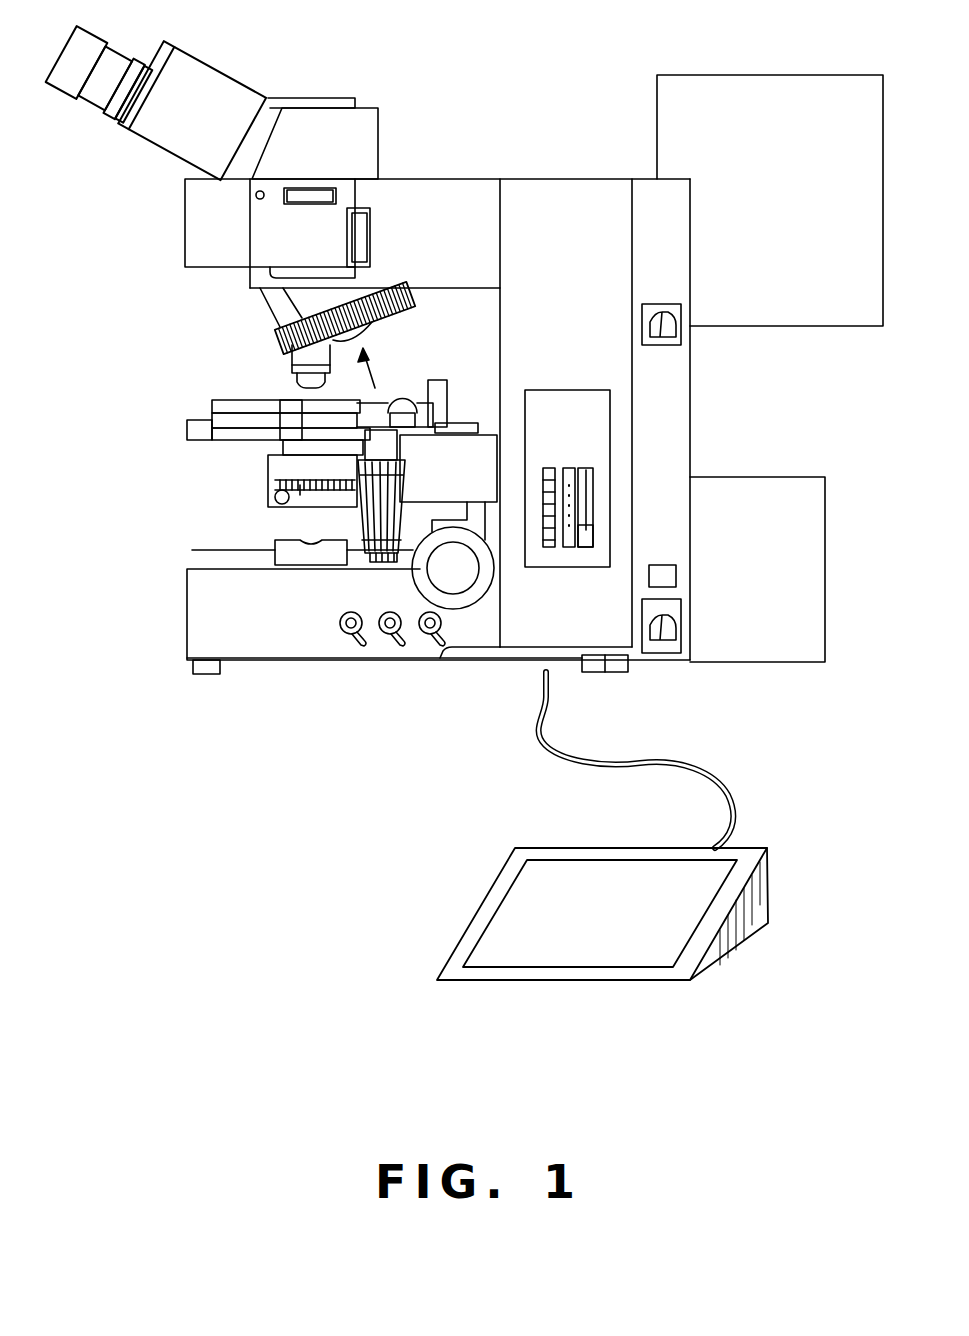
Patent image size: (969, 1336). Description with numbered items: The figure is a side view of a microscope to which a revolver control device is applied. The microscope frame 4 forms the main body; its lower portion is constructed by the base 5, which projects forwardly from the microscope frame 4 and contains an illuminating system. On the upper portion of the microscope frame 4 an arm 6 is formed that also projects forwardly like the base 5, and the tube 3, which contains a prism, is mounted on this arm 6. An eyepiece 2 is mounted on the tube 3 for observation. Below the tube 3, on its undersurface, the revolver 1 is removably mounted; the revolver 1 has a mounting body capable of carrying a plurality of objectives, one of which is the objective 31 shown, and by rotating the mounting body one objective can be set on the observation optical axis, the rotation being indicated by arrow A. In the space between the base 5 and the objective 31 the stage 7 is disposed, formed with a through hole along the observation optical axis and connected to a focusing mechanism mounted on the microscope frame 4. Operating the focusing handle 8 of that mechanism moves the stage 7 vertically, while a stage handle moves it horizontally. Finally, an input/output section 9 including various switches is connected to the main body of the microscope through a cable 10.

The revolver 1 is at (272, 345).
The eyepiece 2 is at (95, 38).
The tube 3 is at (333, 98).
The microscope frame 4 is at (676, 412).
The base 5 is at (286, 658).
The arm 6 is at (446, 182).
The stage 7 is at (216, 400).
The focusing handle 8 is at (438, 578).
The input/output section 9 is at (757, 906).
The cable 10 is at (712, 768).
The objective 31 is at (290, 378).
The rotation direction arrow A is at (378, 372).